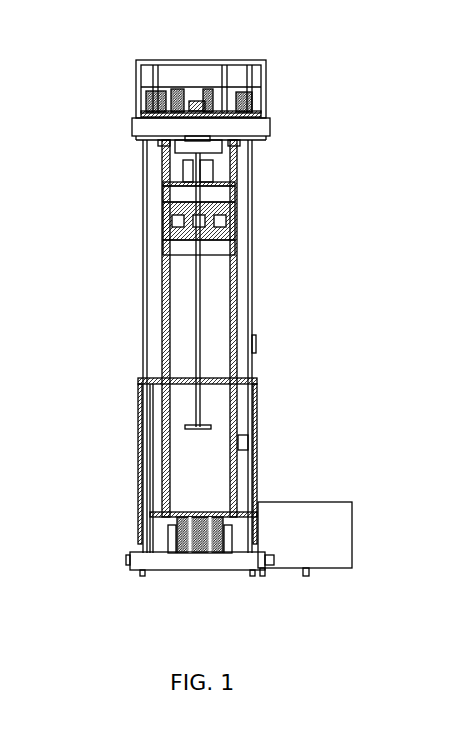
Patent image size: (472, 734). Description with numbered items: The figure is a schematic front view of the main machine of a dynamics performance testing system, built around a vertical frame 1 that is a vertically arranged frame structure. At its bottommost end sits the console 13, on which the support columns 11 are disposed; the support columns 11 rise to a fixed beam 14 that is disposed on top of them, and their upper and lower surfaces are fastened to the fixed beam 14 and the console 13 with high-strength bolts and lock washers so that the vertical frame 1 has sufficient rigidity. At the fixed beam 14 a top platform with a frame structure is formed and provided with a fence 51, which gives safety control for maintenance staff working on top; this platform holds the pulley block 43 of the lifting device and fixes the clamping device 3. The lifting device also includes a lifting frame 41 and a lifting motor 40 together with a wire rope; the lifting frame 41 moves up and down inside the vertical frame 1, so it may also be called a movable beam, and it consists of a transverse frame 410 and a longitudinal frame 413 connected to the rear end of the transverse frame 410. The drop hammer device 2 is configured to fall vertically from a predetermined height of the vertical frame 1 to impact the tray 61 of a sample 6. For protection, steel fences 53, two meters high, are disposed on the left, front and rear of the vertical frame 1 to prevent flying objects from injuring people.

The vertical frame 1 is at (293, 198).
The drop hammer device 2 is at (232, 251).
The clamping device 3 is at (163, 160).
The sample 6 is at (197, 309).
The support columns 11 is at (148, 262).
The console 13 is at (208, 565).
The fixed beam 14 is at (268, 128).
The lifting motor 40 is at (313, 505).
The lifting frame 41 is at (164, 170).
The pulley block 43 is at (146, 105).
The fence 51 is at (267, 77).
The steel fences 53 is at (190, 381).
The tray 61 is at (190, 428).
The transverse frame 410 is at (232, 193).
The longitudinal frame 413 is at (209, 174).